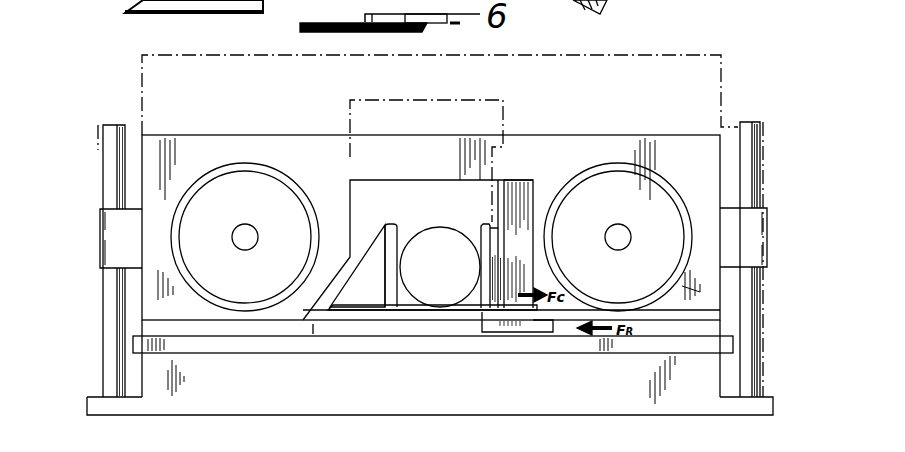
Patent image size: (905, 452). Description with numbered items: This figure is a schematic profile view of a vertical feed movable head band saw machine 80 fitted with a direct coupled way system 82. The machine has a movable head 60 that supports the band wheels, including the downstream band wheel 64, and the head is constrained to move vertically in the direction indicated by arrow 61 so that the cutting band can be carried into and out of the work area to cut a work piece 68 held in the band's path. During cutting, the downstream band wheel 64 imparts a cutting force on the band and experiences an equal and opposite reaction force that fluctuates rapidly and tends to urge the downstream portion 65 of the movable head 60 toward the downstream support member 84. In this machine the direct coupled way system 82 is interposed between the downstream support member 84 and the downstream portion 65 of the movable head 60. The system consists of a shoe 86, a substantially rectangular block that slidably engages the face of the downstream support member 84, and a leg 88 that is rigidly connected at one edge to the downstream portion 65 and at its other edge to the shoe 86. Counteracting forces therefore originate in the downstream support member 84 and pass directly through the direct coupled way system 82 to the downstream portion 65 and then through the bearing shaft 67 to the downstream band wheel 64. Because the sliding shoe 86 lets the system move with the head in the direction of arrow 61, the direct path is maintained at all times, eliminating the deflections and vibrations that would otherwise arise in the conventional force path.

The movable head 60 is at (218, 138).
The arrow indicating direction of head movement 61 is at (60, 214).
The downstream band wheel 64 is at (666, 216).
The downstream portion of movable head 65 is at (705, 290).
The bearing shaft 67 is at (620, 237).
The work piece 68 is at (446, 245).
The vertical feed movable head band saw machine 80 is at (752, 106).
The direct coupled way system 82 is at (512, 213).
The downstream support member 84 is at (487, 222).
The shoe 86 is at (502, 182).
The leg 88 is at (527, 178).